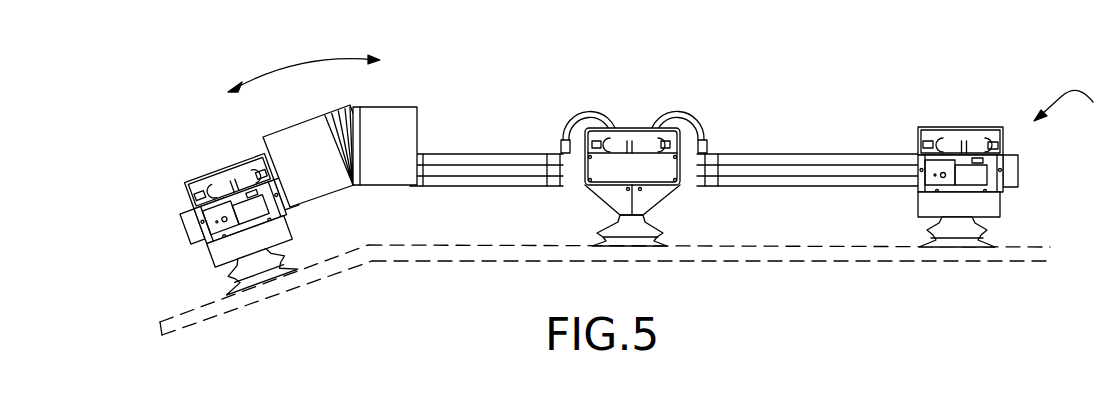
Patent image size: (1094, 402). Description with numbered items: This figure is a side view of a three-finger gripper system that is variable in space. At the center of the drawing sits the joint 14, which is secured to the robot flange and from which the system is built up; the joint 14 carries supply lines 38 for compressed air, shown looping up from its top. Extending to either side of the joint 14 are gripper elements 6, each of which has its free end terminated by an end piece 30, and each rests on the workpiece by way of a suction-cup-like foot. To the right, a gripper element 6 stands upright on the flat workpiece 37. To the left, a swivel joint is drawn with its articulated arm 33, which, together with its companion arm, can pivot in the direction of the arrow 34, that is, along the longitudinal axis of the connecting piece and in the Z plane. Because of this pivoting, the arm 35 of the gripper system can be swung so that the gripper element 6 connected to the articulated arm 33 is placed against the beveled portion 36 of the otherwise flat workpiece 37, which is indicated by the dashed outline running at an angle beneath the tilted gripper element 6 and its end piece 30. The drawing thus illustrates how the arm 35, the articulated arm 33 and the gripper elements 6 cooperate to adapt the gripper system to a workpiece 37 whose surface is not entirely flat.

The gripper element 6 is at (945, 128).
The joint 14 is at (650, 175).
The end piece 30 is at (1015, 176).
The articulated arm 33 is at (291, 147).
The arrow 34 is at (293, 63).
The arm 35 is at (425, 202).
The beveled portion 36 is at (220, 308).
The workpiece 37 is at (822, 262).
The supply lines 38 is at (600, 112).